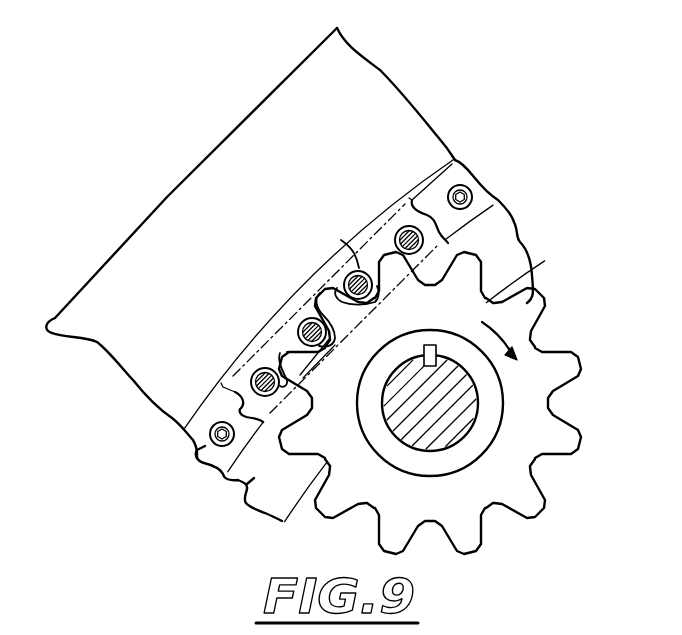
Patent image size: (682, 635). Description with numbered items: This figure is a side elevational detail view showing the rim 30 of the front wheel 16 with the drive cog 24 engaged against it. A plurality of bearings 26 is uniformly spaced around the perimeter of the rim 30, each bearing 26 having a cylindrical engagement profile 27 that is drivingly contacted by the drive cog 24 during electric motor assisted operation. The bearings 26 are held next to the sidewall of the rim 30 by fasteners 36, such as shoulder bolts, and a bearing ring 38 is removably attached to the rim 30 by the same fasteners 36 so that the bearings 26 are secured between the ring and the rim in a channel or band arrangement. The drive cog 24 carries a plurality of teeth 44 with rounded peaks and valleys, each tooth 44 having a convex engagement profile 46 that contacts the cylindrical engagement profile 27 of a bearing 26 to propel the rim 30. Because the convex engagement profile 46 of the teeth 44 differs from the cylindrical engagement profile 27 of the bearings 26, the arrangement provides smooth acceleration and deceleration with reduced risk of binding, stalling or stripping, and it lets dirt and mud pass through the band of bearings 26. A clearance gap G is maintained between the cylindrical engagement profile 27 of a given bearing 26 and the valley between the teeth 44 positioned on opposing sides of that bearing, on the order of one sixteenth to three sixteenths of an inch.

The front wheel 16 is at (161, 201).
The drive cog 24 is at (465, 403).
The bearings 26 is at (302, 326).
The cylindrical engagement profile 27 is at (387, 261).
The rim 30 is at (247, 487).
The fasteners 36 is at (213, 426).
The bearing ring 38 is at (197, 458).
The teeth 44 is at (537, 258).
The convex engagement profile 46 is at (577, 387).
The clearance gap G is at (332, 392).